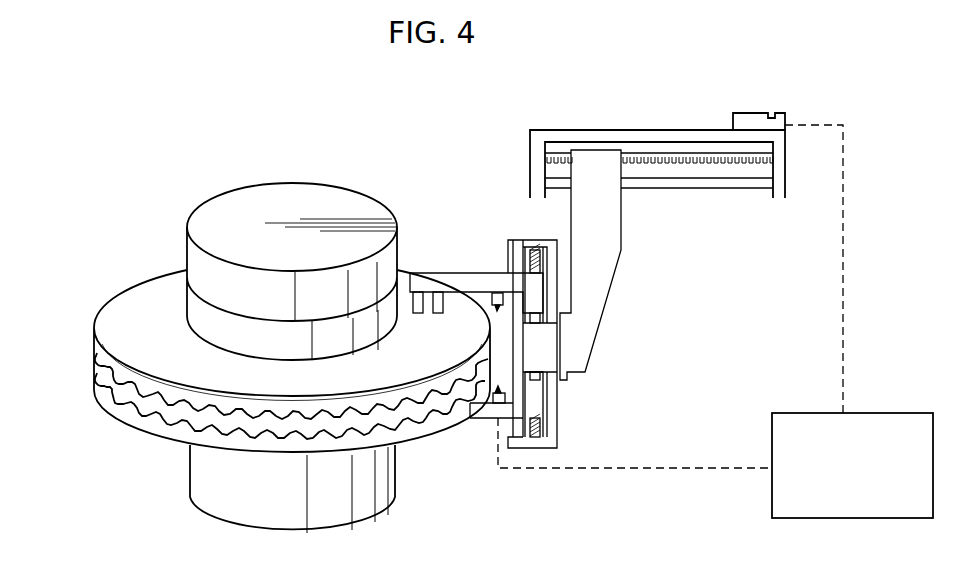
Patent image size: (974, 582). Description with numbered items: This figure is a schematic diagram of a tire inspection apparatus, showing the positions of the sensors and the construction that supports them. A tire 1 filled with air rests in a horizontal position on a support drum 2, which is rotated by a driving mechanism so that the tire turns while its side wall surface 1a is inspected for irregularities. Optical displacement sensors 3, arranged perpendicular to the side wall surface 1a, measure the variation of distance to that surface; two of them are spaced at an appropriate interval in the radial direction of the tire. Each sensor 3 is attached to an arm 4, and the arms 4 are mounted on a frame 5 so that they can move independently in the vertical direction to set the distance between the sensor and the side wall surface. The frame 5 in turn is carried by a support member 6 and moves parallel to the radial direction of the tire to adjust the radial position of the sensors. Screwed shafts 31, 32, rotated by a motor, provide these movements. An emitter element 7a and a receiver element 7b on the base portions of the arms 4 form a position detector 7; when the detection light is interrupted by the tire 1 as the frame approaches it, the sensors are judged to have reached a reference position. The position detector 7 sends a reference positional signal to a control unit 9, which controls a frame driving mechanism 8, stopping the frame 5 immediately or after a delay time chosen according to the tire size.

The tire 1 is at (98, 306).
The side wall surface 1a is at (183, 364).
The support drum 2 is at (345, 206).
The optical displacement sensor 3 is at (422, 310).
The arm 4 is at (447, 275).
The frame 5 is at (600, 278).
The support member 6 is at (649, 130).
The position detector 7 is at (632, 380).
The emitter element 7a is at (500, 306).
The receiver element 7b is at (505, 390).
The frame driving mechanism 8 is at (752, 109).
The control unit 9 is at (907, 420).
The screwed shaft 31 is at (540, 262).
The screwed shaft 32 is at (747, 165).